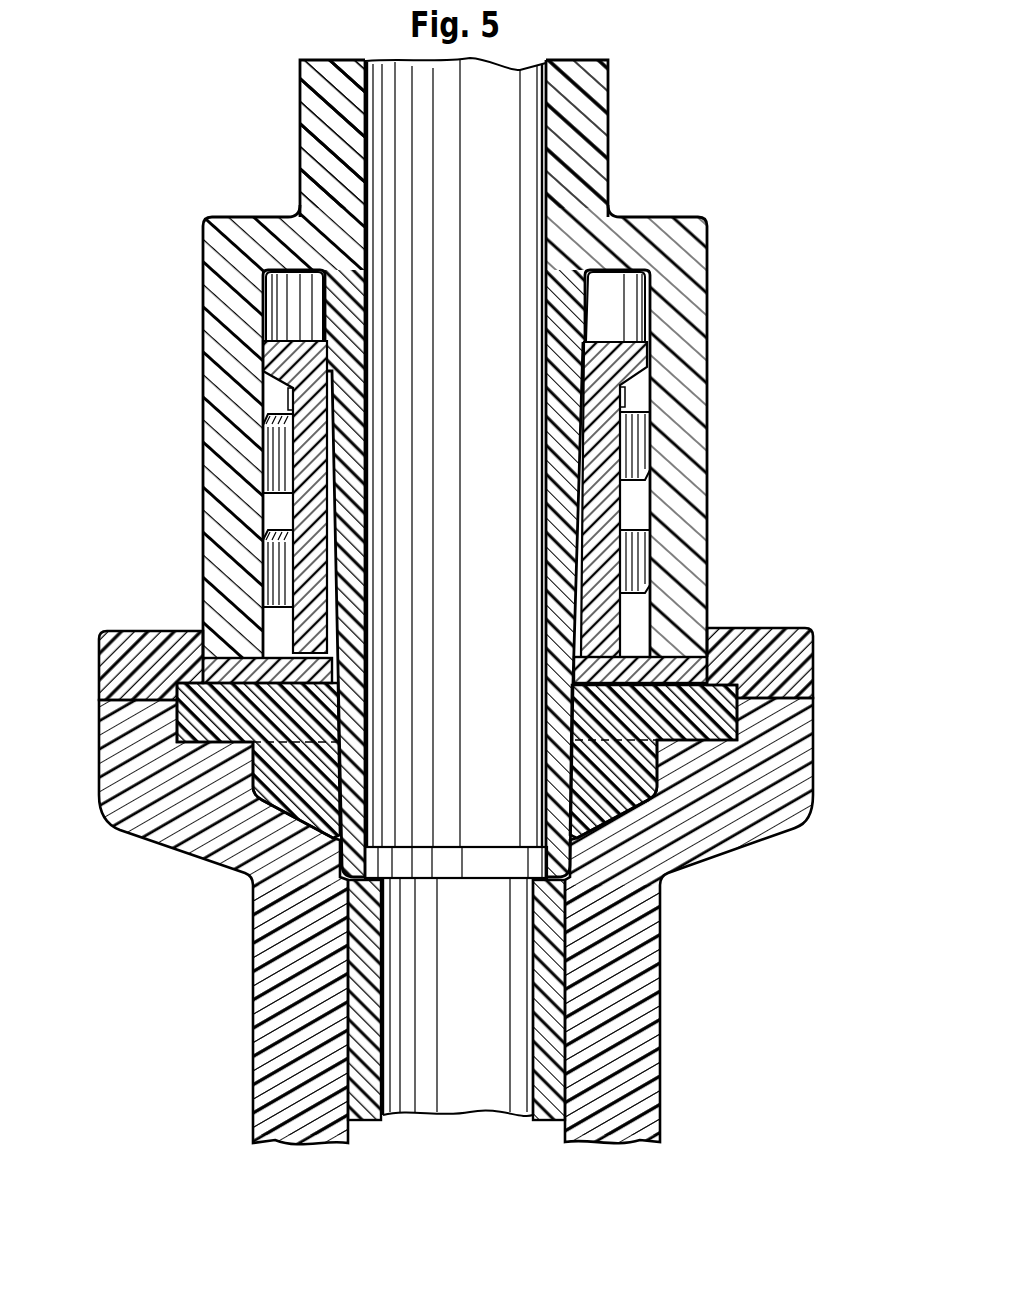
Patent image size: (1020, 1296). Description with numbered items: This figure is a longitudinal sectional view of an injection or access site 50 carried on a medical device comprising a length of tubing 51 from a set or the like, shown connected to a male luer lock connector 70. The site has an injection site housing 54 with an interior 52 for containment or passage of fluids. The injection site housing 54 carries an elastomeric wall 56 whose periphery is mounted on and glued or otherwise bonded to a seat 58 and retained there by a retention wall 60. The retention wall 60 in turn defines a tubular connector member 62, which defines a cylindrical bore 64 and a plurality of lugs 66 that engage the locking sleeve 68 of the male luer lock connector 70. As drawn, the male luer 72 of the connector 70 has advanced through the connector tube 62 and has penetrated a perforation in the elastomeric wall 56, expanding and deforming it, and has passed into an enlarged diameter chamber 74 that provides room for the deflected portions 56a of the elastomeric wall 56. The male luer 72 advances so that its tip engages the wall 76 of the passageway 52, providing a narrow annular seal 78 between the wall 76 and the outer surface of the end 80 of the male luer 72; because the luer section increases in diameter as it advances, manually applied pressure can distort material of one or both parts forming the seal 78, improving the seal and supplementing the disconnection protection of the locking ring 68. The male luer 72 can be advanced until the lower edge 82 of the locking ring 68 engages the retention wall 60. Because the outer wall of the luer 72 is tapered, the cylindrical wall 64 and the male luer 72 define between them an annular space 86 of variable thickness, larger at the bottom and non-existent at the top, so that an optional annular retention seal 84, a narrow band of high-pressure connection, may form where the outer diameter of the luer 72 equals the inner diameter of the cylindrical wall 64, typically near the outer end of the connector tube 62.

The injection or access site 50 is at (454, 616).
The tubing 51 is at (383, 1043).
The interior 52 is at (361, 616).
The injection site housing 54 is at (640, 1043).
The elastomeric wall 56 is at (722, 680).
The deflected portions of elastomeric wall 56a is at (653, 800).
The seat 58 is at (523, 761).
The retention wall 60 is at (139, 651).
The tubular connector member 62 is at (289, 389).
The cylindrical bore 64 is at (337, 518).
The lugs 66 is at (456, 494).
The locking sleeve 68 is at (462, 468).
The male luer lock connector 70 is at (300, 112).
The male luer 72 is at (571, 555).
The enlarged diameter chamber 74 is at (426, 921).
The wall of passageway 76 is at (357, 993).
The annular seal 78 is at (658, 877).
The end of male luer 80 is at (353, 852).
The lower edge of locking ring 82 is at (610, 405).
The annular retention seal 84 is at (587, 360).
The annular space 86 is at (571, 520).